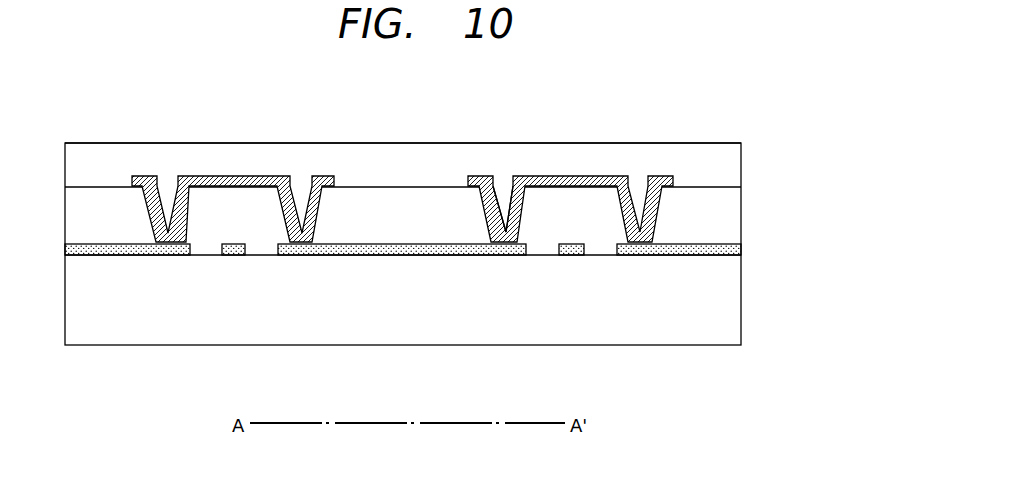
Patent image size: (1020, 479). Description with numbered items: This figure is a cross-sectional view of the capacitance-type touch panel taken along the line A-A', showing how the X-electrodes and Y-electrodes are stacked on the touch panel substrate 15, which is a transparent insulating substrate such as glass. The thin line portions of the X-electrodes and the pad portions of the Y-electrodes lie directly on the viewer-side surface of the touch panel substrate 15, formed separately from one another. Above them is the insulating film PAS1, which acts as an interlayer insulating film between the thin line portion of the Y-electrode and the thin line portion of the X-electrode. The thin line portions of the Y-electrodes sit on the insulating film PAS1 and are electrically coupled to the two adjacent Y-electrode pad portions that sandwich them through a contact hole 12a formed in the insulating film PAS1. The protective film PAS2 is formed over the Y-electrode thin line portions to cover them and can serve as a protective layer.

The contact hole 12a is at (512, 191).
The insulating film PAS1 is at (730, 223).
The protective film PAS2 is at (730, 171).
The touch panel substrate 15 is at (730, 303).